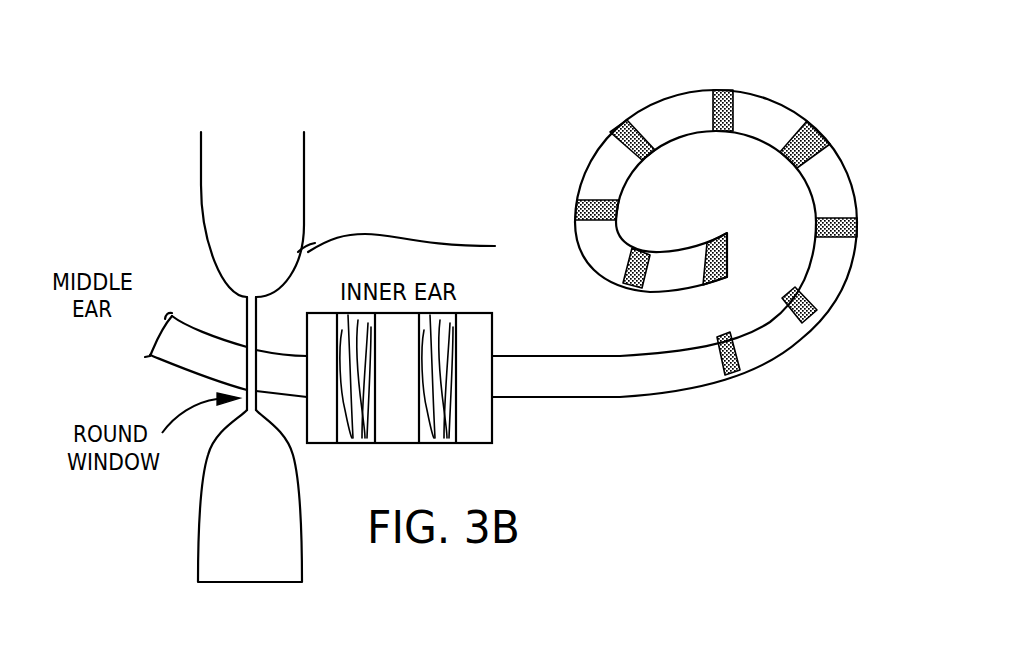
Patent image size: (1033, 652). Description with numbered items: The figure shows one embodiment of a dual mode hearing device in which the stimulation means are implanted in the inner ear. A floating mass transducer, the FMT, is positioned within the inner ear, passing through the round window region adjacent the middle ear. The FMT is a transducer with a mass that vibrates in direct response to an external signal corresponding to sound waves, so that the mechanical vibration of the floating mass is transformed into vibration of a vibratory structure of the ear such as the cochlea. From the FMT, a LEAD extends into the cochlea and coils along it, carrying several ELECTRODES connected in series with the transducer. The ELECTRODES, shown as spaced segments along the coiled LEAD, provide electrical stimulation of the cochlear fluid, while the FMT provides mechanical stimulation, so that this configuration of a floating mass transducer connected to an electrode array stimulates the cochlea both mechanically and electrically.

The floating mass transducer FMT is at (518, 425).
The lead LEAD is at (711, 395).
The electrodes ELECTRODES is at (717, 79).